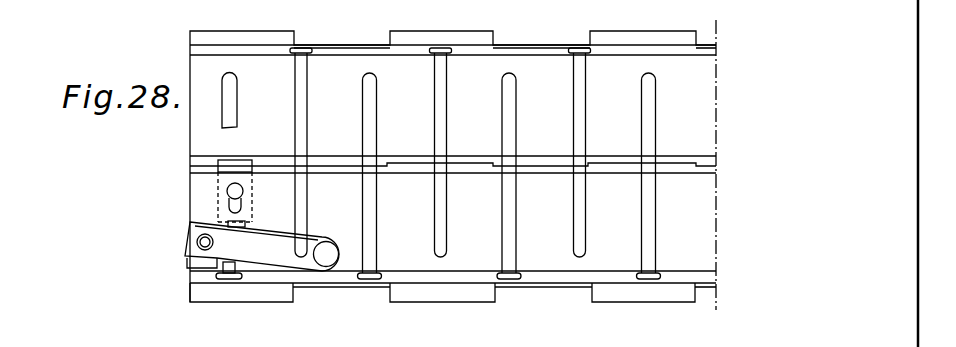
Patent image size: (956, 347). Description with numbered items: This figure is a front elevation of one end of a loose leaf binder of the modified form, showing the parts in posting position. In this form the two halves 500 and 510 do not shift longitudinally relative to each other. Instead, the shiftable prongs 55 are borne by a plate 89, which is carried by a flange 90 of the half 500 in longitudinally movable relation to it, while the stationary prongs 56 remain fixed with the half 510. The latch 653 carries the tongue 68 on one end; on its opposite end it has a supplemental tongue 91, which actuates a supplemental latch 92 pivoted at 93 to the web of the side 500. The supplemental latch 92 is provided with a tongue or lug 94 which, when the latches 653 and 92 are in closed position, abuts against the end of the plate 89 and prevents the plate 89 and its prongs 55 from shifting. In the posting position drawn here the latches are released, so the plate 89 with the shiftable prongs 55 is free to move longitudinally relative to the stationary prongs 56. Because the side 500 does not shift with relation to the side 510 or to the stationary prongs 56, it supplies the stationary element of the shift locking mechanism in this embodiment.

The shiftable prongs 55 is at (647, 228).
The stationary prongs 56 is at (438, 97).
The tongue 68 is at (218, 164).
The latch 653 is at (225, 200).
The plate 89 is at (708, 278).
The flange 90 is at (718, 287).
The supplemental tongue 91 is at (240, 222).
The supplemental latch 92 is at (188, 232).
The pivot 93 is at (327, 260).
The tongue or lug 94 is at (197, 263).
The half 500 is at (705, 208).
The half 510 is at (702, 93).